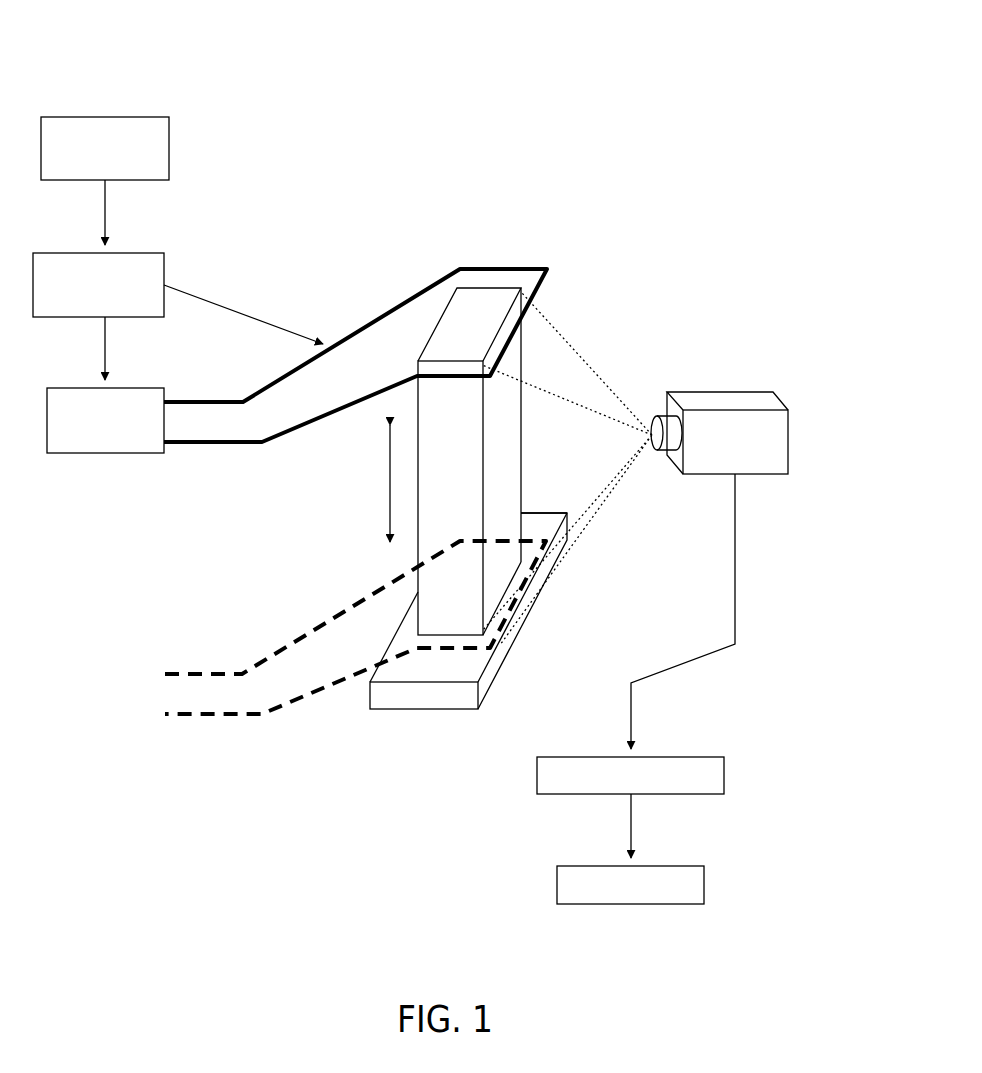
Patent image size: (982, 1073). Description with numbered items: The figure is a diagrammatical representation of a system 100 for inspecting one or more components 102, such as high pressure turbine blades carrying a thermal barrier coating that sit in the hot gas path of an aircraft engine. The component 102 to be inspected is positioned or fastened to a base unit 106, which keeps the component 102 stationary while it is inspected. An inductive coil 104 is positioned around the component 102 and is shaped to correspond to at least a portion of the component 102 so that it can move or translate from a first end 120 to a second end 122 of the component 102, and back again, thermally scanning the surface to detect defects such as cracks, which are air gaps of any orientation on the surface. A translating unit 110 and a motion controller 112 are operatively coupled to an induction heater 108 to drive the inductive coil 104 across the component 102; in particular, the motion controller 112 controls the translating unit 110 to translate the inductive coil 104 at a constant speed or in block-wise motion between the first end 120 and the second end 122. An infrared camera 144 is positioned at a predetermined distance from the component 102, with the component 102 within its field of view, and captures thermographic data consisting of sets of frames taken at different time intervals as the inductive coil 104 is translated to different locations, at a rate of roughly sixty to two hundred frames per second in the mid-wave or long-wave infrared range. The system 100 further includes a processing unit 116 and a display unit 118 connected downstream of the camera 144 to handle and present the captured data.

The system 100 is at (708, 66).
The component 102 is at (520, 457).
The inductive coil 104 is at (505, 266).
The base unit 106 is at (425, 709).
The induction heater 108 is at (78, 453).
The translating unit 110 is at (164, 263).
The motion controller 112 is at (169, 148).
The processing unit 116 is at (724, 775).
The display unit 118 is at (704, 885).
The first end 120 is at (563, 285).
The second end 122 is at (538, 510).
The IR camera 144 is at (788, 440).